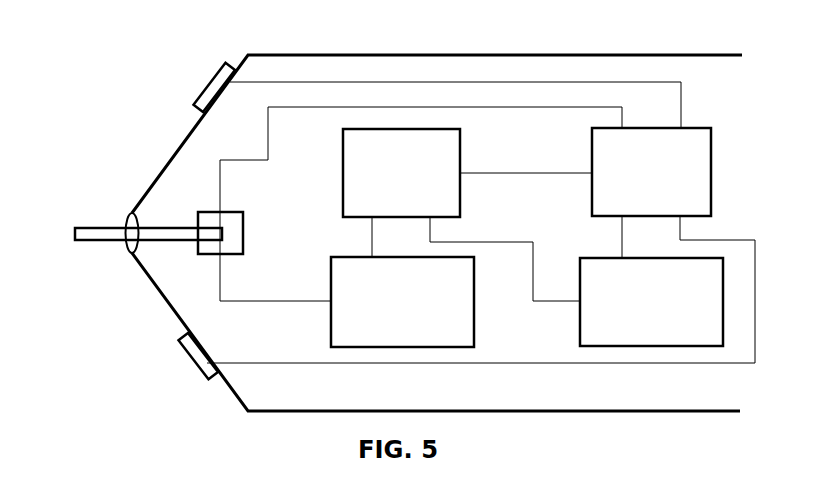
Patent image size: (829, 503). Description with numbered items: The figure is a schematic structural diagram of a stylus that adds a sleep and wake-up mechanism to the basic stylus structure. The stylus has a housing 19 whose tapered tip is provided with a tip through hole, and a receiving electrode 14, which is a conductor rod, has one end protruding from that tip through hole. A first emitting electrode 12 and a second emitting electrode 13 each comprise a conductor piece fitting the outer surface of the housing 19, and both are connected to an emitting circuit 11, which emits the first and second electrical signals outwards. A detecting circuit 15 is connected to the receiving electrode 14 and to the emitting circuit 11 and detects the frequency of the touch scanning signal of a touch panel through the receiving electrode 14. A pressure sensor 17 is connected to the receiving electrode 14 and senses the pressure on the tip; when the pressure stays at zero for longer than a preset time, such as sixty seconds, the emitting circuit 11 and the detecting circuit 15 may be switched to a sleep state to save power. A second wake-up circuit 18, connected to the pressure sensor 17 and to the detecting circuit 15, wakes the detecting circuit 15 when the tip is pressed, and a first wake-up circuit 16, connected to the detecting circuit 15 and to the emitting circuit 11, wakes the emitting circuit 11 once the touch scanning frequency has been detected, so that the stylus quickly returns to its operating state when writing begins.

The emitting circuit 11 is at (712, 146).
The first emitting electrode 12 is at (188, 345).
The second emitting electrode 13 is at (223, 72).
The receiving electrode 14 is at (85, 227).
The detecting circuit 15 is at (462, 148).
The first wake-up circuit 16 is at (600, 256).
The pressure sensor 17 is at (244, 228).
The second wake-up circuit 18 is at (474, 318).
The housing 19 is at (400, 53).